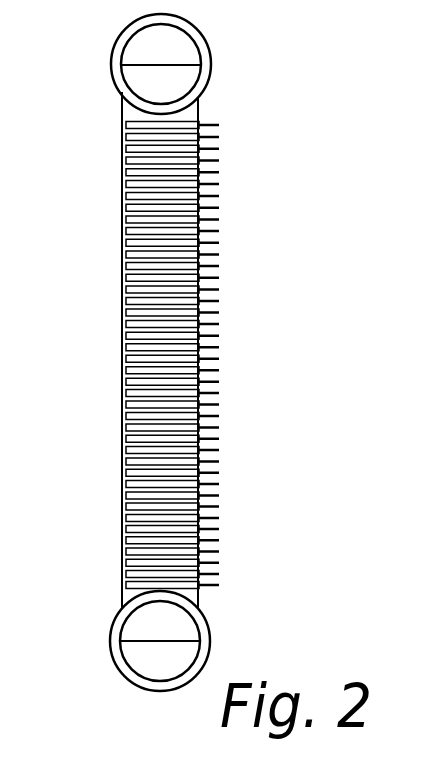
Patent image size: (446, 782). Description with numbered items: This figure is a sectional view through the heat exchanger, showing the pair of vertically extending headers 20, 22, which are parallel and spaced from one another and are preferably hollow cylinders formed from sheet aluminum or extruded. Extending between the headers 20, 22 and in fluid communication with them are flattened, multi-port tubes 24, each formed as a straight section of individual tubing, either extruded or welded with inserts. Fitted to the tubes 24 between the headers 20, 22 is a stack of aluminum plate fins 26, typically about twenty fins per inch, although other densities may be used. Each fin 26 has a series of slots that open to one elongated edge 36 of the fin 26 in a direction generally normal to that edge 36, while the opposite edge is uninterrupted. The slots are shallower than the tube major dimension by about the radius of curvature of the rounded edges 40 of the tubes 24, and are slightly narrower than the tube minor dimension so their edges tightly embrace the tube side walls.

The header 20 is at (115, 49).
The header 22 is at (115, 661).
The flattened multi-port tube 24 is at (121, 114).
The plate fin 26 is at (219, 196).
The elongated edge 36 is at (123, 333).
The rounded edge 40 is at (122, 423).